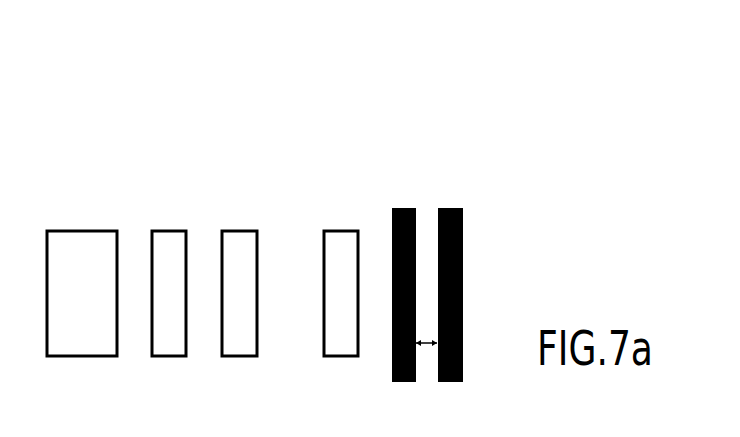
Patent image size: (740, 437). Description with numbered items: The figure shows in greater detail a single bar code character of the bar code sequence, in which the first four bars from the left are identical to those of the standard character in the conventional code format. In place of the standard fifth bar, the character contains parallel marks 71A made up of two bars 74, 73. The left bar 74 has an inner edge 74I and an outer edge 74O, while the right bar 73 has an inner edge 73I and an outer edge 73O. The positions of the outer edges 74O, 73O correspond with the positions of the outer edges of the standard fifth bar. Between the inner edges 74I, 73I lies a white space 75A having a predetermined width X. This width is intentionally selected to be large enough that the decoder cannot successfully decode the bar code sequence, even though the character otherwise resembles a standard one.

The parallel marks 71A is at (506, 158).
The bar 74 is at (393, 297).
The bar 73 is at (462, 300).
The outer edge 74O is at (393, 207).
The inner edge 74I is at (415, 207).
The inner edge 73I is at (439, 207).
The outer edge 73O is at (463, 207).
The white space 75A is at (429, 362).